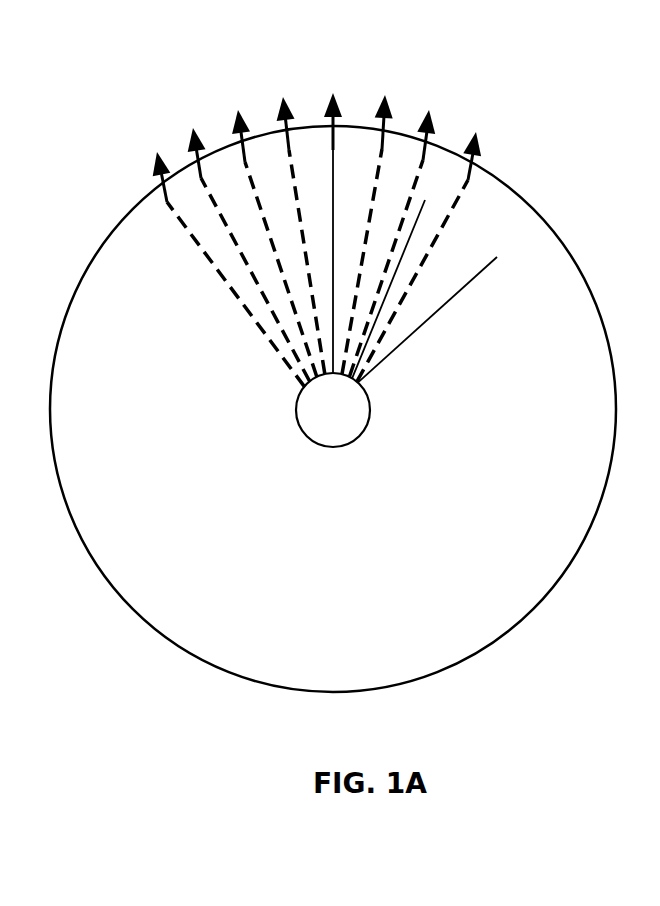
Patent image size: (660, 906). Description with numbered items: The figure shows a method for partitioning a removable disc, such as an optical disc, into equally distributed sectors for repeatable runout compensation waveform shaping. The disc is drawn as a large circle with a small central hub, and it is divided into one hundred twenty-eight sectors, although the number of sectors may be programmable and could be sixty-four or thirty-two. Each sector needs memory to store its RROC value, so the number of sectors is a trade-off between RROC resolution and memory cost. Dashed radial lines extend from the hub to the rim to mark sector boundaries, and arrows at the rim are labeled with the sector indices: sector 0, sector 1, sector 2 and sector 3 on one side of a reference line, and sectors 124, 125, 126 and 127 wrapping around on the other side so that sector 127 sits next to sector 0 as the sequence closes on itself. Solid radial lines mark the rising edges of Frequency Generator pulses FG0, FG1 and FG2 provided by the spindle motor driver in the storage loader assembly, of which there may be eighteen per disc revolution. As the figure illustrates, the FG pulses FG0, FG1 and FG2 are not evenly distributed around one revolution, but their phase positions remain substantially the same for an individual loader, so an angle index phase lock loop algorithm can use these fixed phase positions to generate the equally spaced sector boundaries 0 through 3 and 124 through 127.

The sector 0 is at (342, 116).
The sector 1 is at (369, 218).
The sector 2 is at (394, 228).
The sector 3 is at (423, 239).
The sector 124 is at (213, 251).
The sector 125 is at (236, 240).
The sector 126 is at (260, 223).
The sector 127 is at (292, 217).
The frequency generator pulse FG0 is at (339, 245).
The frequency generator pulse FG1 is at (406, 275).
The frequency generator pulse FG2 is at (443, 306).